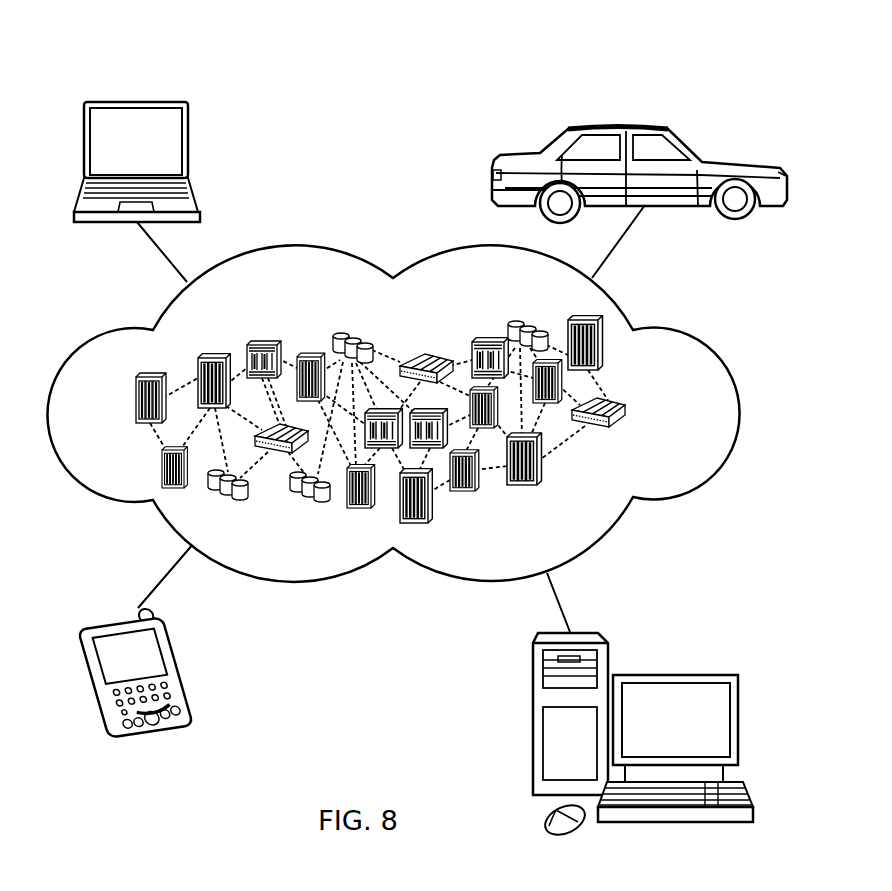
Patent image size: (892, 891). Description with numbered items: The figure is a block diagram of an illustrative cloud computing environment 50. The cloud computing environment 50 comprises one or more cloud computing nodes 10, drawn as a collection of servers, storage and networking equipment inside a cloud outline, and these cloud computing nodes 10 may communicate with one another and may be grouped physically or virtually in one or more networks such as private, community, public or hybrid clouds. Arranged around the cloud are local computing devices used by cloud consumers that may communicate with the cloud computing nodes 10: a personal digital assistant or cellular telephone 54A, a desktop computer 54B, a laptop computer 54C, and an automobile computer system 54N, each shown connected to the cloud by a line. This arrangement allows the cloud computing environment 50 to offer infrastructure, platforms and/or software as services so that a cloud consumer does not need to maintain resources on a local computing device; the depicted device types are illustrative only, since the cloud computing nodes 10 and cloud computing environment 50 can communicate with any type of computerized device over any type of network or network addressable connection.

The cloud computing nodes 10 is at (641, 415).
The cloud computing environment 50 is at (445, 410).
The personal digital assistant (PDA) or cellular telephone 54A is at (118, 622).
The desktop computer 54B is at (675, 672).
The laptop computer 54C is at (136, 100).
The automobile computer system 54N is at (621, 124).